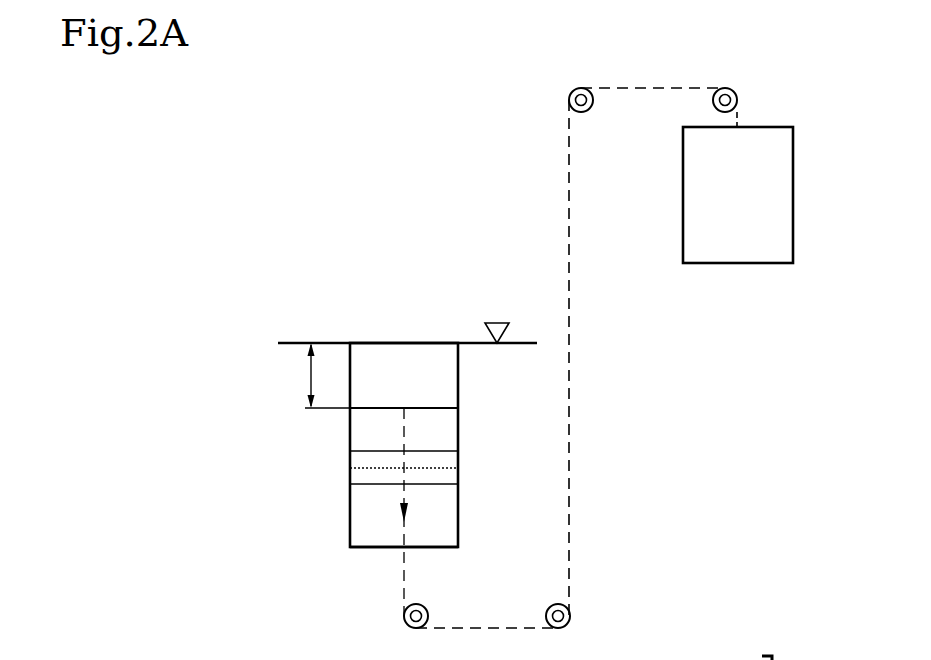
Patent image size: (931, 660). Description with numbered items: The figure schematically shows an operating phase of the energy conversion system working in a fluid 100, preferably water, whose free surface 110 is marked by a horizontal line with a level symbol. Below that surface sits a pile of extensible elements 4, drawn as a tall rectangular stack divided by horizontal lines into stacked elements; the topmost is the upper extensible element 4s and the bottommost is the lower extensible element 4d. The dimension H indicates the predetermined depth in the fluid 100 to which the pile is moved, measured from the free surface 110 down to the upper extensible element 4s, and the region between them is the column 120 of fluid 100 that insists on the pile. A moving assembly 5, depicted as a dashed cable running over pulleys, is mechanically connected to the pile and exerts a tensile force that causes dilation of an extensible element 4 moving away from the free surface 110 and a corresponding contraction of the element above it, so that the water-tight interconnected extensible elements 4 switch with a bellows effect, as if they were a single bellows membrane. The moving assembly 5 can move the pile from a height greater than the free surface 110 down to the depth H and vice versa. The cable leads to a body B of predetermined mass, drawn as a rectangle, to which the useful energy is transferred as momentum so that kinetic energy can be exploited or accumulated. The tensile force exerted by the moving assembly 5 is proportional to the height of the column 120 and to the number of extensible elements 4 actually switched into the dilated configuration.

The moving assembly 5 is at (660, 82).
The column of fluid 120 is at (377, 372).
The free surface 110 is at (499, 320).
The upper extensible element 4s is at (430, 405).
The depth H is at (310, 373).
The fluid 100 is at (326, 440).
The extensible elements 4 is at (462, 419).
The lower extensible element 4d is at (369, 551).
The body B is at (737, 268).